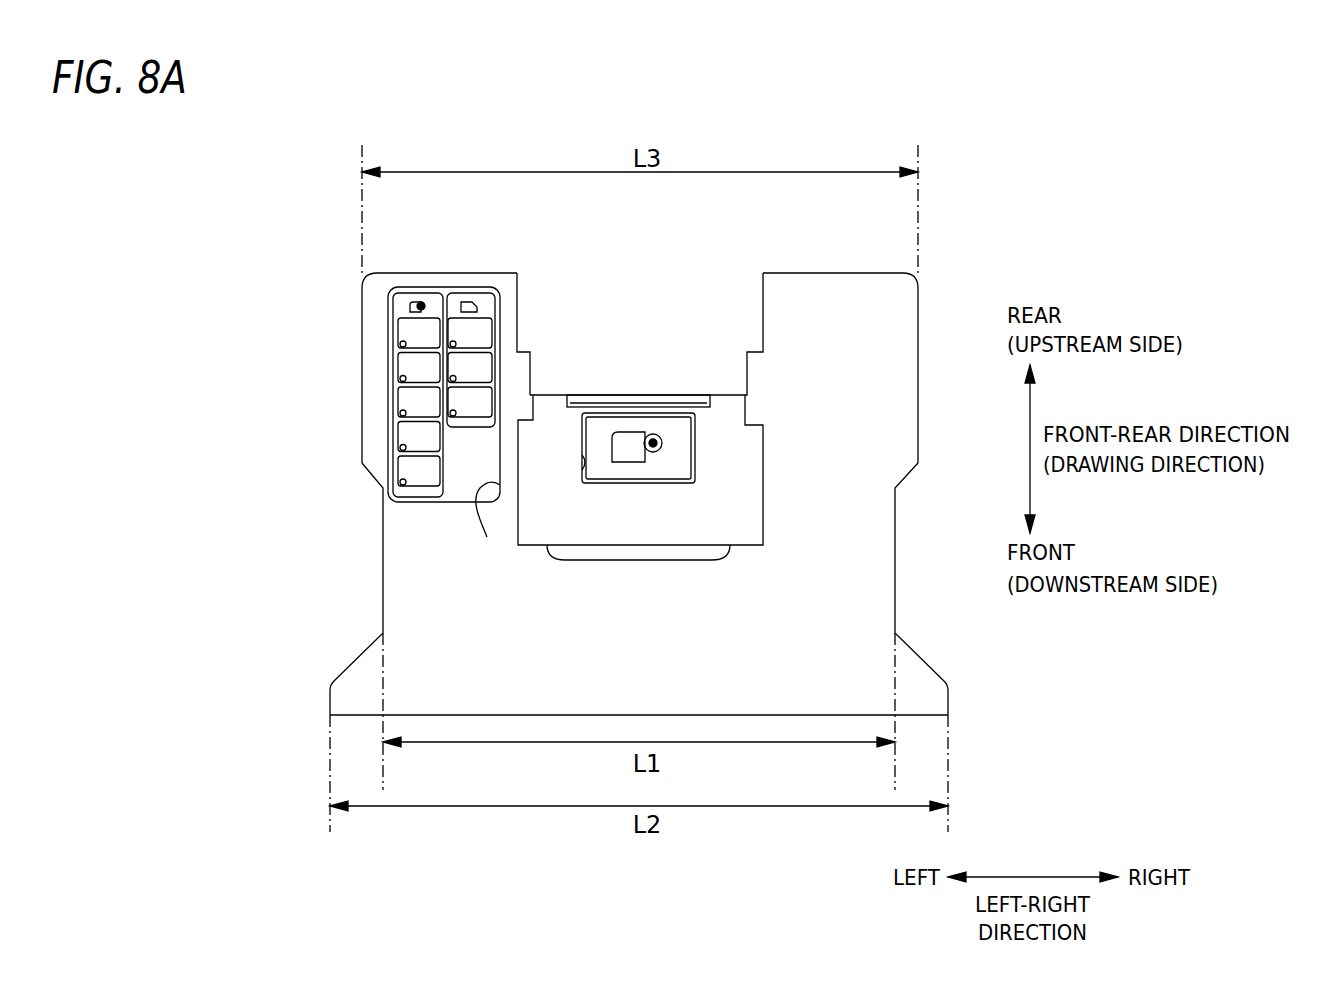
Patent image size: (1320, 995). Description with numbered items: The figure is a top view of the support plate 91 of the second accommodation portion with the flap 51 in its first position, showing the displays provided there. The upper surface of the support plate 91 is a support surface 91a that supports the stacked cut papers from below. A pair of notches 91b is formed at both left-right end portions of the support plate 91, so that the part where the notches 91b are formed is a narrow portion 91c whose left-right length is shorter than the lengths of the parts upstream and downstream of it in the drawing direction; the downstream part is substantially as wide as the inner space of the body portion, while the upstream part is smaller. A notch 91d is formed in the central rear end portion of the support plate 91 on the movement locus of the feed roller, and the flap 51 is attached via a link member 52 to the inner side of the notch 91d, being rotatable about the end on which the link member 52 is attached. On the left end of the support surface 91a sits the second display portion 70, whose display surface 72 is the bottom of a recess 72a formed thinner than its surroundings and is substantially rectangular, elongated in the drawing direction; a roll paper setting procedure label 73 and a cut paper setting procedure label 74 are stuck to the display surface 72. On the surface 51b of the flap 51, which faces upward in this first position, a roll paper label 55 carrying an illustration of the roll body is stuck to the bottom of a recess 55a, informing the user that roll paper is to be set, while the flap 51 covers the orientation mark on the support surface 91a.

The second display portion 70 is at (360, 322).
The display surface 72 is at (452, 490).
The recess 72a is at (494, 525).
The roll paper setting procedure label 73 is at (417, 293).
The cut paper setting procedure label 74 is at (465, 293).
The support plate 91 is at (897, 415).
The support surface 91a is at (903, 315).
The notches 91b is at (895, 580).
The narrow portion 91c is at (400, 540).
The notch 91d is at (520, 318).
The flap 51 is at (662, 525).
The surface 51b is at (625, 537).
The link member 52 is at (601, 396).
The roll paper label 55 is at (677, 413).
The recess 55a is at (583, 455).